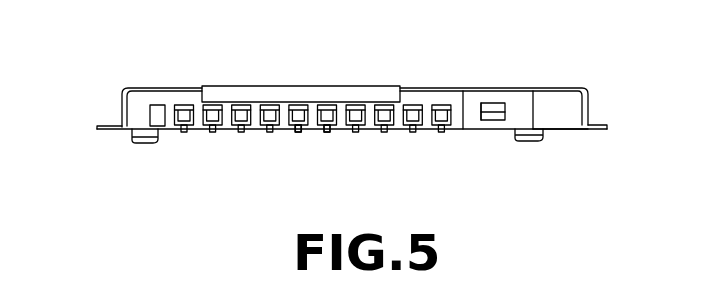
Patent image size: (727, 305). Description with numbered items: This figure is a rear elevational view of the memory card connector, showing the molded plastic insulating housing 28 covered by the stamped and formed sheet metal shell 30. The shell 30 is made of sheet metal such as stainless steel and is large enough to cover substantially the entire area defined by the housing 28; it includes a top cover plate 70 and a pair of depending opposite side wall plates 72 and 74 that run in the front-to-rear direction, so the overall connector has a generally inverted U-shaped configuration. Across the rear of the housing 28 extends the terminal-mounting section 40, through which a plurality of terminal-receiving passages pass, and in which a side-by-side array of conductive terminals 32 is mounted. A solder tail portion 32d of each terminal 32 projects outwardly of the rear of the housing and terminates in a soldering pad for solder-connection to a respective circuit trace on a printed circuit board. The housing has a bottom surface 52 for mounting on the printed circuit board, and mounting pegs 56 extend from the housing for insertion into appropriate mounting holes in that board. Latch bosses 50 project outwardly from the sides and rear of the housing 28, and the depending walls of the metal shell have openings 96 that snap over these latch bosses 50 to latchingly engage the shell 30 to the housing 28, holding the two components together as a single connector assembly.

The metal shell 30 is at (266, 78).
The top cover plate 70 is at (368, 87).
The latch bosses 50 is at (489, 103).
The side wall plate 72 is at (121, 104).
The side wall plate 74 is at (590, 101).
The mounting pegs 56 is at (143, 138).
The bottom surface 52 is at (173, 133).
The conductive terminals 32 is at (296, 158).
The solder tail portion 32d is at (323, 134).
The openings 96 is at (478, 121).
The terminal-mounting section 40 is at (553, 117).
The insulating housing 28 is at (578, 133).